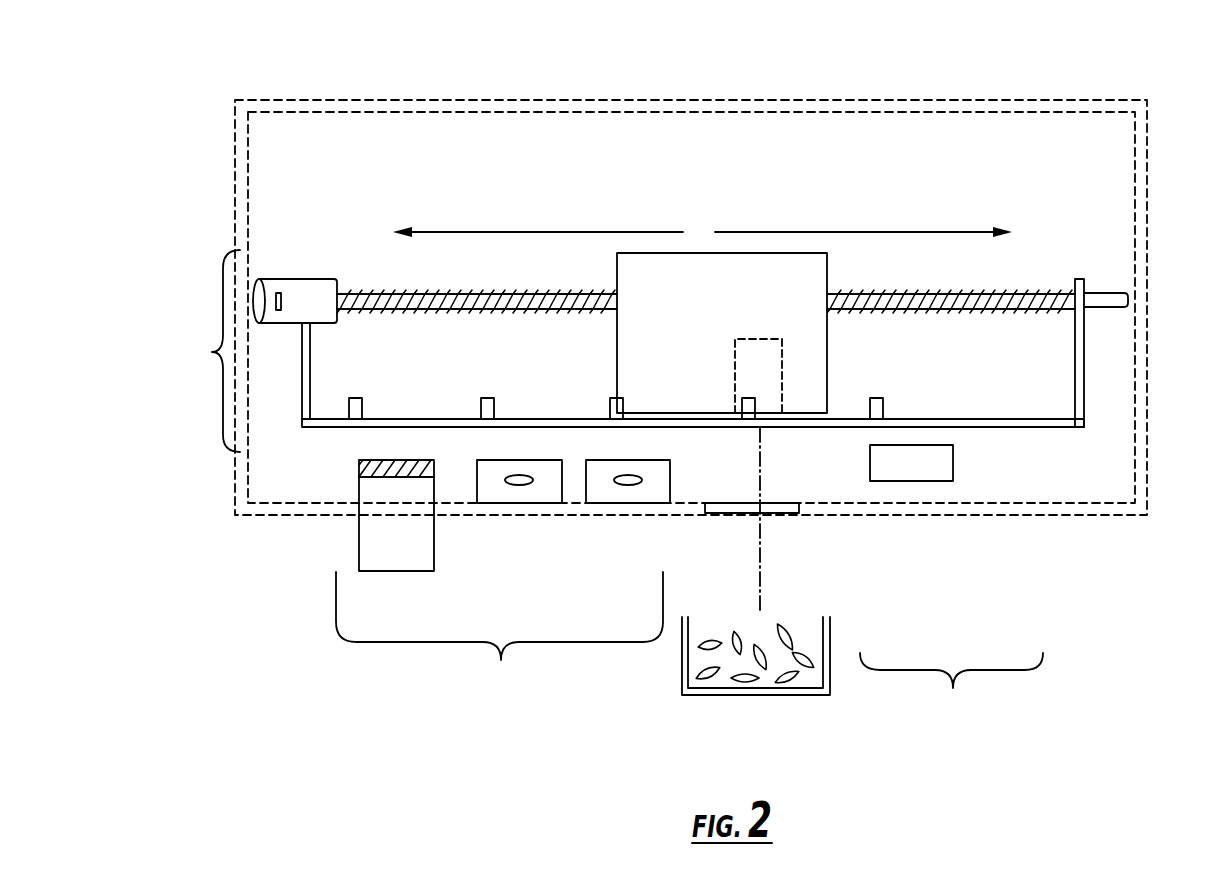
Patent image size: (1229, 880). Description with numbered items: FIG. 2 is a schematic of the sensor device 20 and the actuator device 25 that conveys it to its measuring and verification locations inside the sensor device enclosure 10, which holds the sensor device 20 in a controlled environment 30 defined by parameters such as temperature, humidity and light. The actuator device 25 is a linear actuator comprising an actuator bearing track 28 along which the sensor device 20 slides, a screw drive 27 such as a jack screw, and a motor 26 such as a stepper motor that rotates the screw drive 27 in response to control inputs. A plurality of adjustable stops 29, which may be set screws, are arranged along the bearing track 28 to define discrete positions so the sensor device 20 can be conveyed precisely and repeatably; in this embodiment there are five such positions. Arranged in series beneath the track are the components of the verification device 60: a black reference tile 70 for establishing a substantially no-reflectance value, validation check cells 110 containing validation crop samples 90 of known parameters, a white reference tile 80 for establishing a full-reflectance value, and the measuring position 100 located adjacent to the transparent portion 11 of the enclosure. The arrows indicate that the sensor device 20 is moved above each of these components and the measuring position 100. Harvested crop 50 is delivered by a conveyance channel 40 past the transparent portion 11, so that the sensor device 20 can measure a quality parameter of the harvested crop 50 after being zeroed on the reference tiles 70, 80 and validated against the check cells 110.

The sensor device enclosure 10 is at (828, 78).
The controlled environment 30 is at (990, 158).
The actuator device 25 is at (212, 352).
The motor 26 is at (299, 282).
The screw drive 27 is at (375, 292).
The sensor device 20 is at (713, 303).
The actuator bearing track 28 is at (1020, 428).
The adjustable stops 29 is at (355, 398).
The black reference tile 70 is at (383, 480).
The validation check cells 110 is at (495, 487).
The validation crop sample 90 is at (515, 487).
The transparent portion 11 is at (728, 510).
The measuring position 100 is at (760, 470).
The white reference tile 80 is at (902, 463).
The verification device 60 is at (501, 660).
The conveyance channel 40 is at (668, 662).
The harvested crop 50 is at (743, 682).